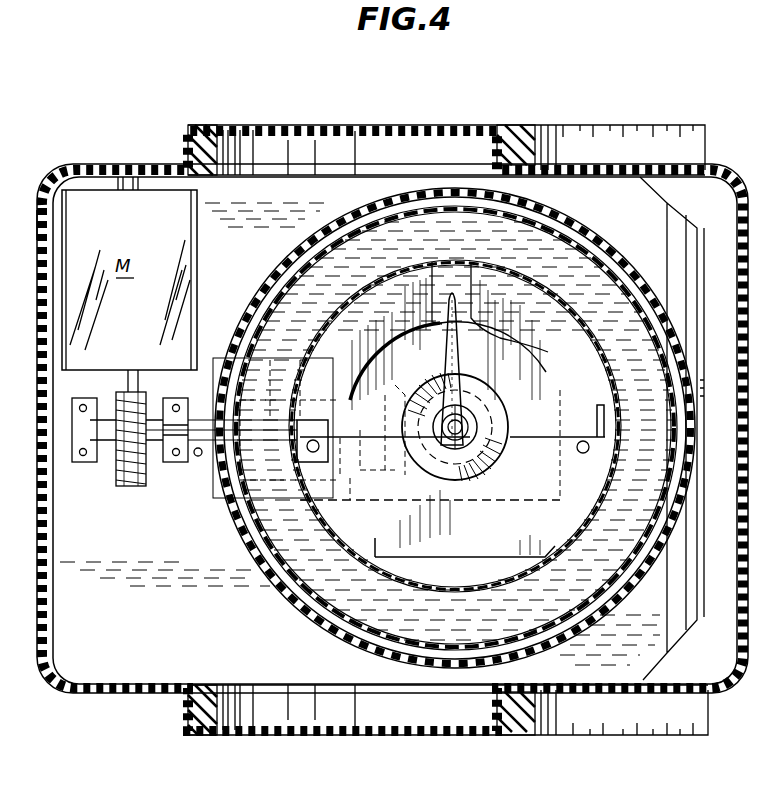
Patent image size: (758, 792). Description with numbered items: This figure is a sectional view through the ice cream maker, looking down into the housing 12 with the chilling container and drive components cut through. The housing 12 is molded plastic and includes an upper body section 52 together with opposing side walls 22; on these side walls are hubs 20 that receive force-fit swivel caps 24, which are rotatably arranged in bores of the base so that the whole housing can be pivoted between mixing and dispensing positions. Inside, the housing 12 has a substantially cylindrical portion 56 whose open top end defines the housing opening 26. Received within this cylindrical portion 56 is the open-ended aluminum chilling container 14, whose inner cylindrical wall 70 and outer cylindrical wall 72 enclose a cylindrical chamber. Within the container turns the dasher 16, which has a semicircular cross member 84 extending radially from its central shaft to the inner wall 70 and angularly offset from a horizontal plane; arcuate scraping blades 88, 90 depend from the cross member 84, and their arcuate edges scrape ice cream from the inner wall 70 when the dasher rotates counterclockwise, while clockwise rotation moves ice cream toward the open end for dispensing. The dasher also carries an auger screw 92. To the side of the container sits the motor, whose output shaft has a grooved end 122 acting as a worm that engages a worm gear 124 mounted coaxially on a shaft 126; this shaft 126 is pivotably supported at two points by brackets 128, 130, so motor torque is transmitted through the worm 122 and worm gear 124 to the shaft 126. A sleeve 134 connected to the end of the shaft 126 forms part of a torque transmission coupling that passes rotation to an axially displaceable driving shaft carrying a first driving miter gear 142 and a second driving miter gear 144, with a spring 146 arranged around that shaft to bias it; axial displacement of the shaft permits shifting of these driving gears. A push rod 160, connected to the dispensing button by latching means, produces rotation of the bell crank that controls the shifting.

The housing 12 is at (38, 667).
The upper body section 52 is at (38, 218).
The side walls 22 is at (88, 170).
The hubs 20 is at (234, 125).
The swivel caps 24 is at (352, 125).
The cylindrical portion 56 is at (645, 290).
The chilling container 14 is at (340, 222).
The housing opening 26 is at (282, 262).
The sleeve 134 is at (252, 526).
The outer cylindrical wall 72 is at (590, 232).
The inner cylindrical wall 70 is at (600, 260).
The dasher 16 is at (534, 350).
The cross member 84 is at (410, 340).
The arcuate scraping blade 88 is at (297, 412).
The auger screw 92 is at (485, 396).
The arcuate scraping blade 90 is at (606, 420).
The worm gear 124 is at (118, 398).
The shaft 126 is at (200, 420).
The bracket 128 is at (84, 462).
The grooved end 122 is at (131, 486).
The bracket 130 is at (178, 462).
The push rod 160 is at (200, 456).
The spring 146 is at (430, 442).
The second driving miter gear 144 is at (497, 462).
The first driving miter gear 142 is at (432, 508).